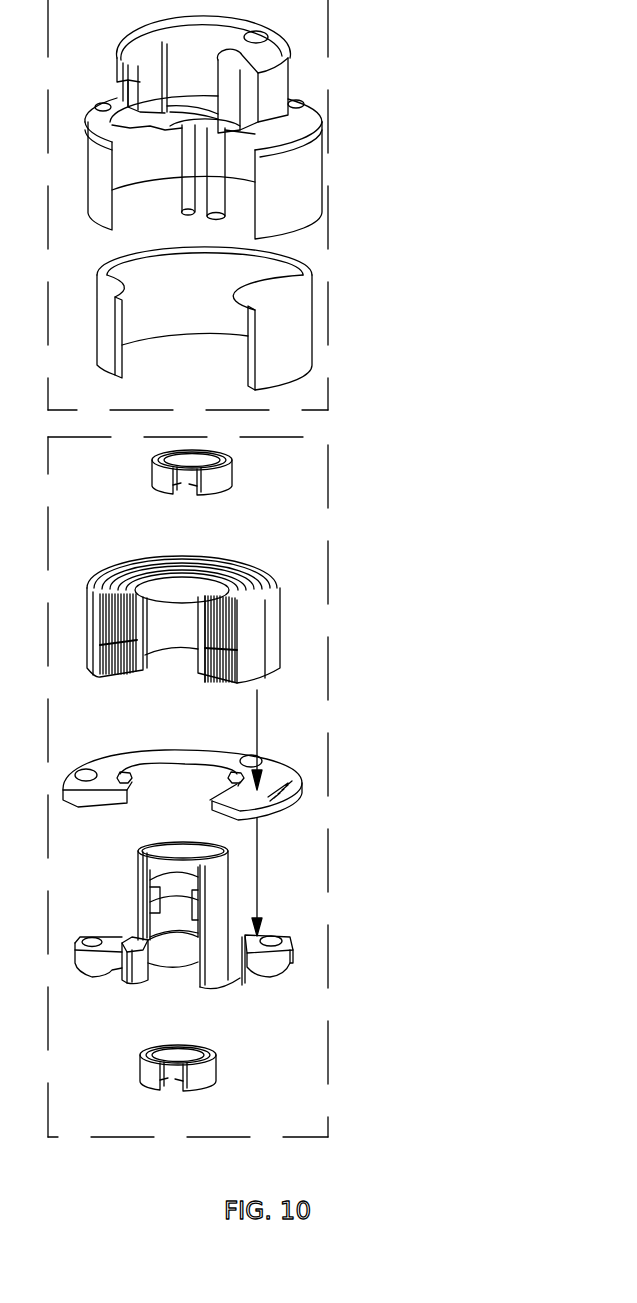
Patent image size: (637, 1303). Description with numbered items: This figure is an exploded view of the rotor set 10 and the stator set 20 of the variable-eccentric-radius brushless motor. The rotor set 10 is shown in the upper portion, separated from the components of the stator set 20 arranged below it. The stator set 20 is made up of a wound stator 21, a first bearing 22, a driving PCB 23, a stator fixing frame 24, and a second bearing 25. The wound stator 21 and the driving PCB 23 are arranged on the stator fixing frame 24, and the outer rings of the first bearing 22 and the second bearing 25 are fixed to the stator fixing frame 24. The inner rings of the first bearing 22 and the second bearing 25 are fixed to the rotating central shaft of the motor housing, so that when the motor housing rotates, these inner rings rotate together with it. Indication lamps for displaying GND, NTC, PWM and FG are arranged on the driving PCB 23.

The rotor set 10 is at (329, 245).
The stator set 20 is at (331, 731).
The wound stator 21 is at (276, 626).
The first bearing 22 is at (232, 482).
The driving PCB 23 is at (260, 757).
The stator fixing frame 24 is at (247, 985).
The second bearing 25 is at (217, 1077).